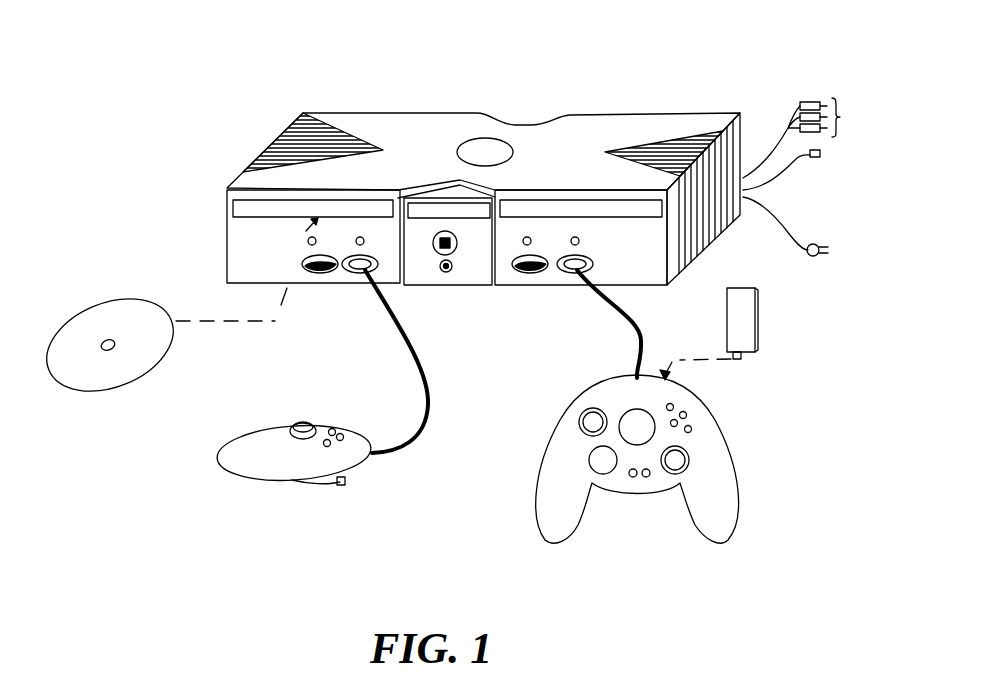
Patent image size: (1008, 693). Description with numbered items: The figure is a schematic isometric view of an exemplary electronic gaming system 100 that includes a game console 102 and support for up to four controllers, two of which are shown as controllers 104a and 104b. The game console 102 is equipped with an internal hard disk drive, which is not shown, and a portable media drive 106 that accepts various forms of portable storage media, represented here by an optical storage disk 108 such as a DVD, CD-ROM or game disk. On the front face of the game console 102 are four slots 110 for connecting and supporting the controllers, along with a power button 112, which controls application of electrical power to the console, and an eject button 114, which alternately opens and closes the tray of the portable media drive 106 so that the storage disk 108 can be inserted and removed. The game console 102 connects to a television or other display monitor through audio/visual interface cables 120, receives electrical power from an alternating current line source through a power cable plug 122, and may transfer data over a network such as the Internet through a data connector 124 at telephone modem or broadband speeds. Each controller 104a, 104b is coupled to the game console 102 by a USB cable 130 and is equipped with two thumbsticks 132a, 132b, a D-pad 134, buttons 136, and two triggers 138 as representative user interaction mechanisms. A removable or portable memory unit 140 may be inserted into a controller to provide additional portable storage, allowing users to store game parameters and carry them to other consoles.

The electronic gaming system 100 is at (611, 70).
The game console 102 is at (343, 112).
The controller 104a is at (292, 481).
The controller 104b is at (548, 532).
The portable media drive 106 is at (243, 207).
The optical storage disk 108 is at (120, 385).
The slots 110 is at (356, 273).
The power button 112 is at (447, 272).
The eject button 114 is at (446, 231).
The audio/visual (A/V) interface cables 120 is at (808, 100).
The power cable plug 122 is at (812, 256).
The data connector 124 is at (784, 175).
The USB cables 130 is at (426, 372).
The thumbstick 132a is at (580, 417).
The thumbstick 132b is at (299, 421).
The D-pad 134 is at (590, 460).
The buttons 136 is at (688, 415).
The triggers 138 is at (346, 484).
The memory unit (MU) 140 is at (758, 318).